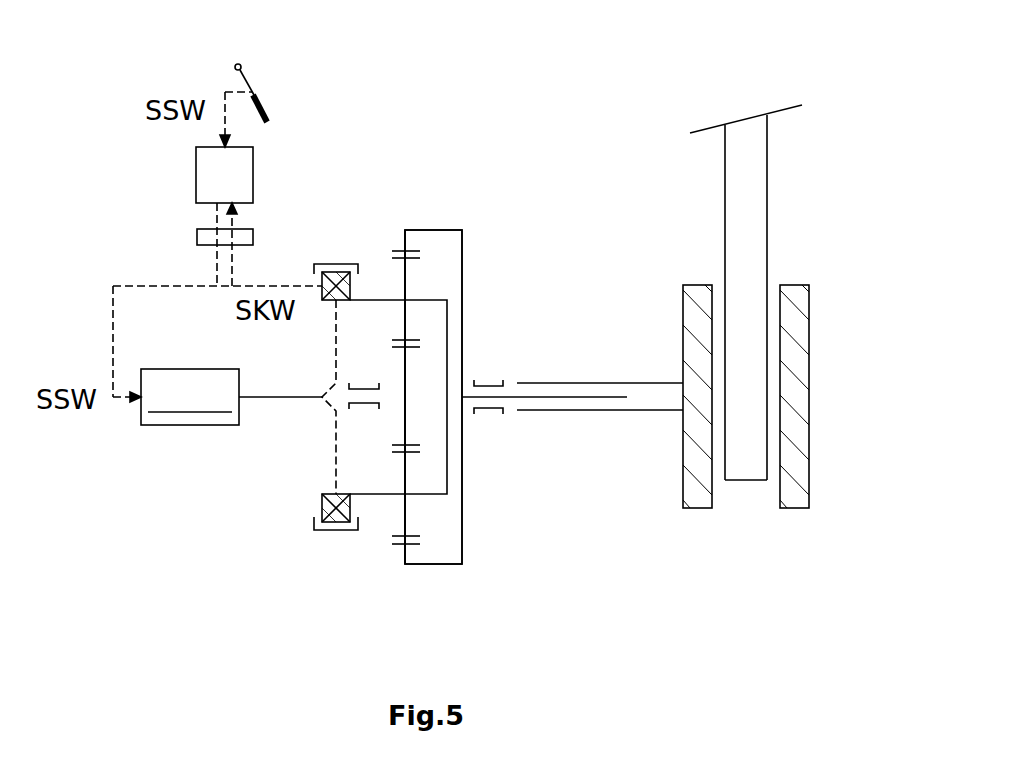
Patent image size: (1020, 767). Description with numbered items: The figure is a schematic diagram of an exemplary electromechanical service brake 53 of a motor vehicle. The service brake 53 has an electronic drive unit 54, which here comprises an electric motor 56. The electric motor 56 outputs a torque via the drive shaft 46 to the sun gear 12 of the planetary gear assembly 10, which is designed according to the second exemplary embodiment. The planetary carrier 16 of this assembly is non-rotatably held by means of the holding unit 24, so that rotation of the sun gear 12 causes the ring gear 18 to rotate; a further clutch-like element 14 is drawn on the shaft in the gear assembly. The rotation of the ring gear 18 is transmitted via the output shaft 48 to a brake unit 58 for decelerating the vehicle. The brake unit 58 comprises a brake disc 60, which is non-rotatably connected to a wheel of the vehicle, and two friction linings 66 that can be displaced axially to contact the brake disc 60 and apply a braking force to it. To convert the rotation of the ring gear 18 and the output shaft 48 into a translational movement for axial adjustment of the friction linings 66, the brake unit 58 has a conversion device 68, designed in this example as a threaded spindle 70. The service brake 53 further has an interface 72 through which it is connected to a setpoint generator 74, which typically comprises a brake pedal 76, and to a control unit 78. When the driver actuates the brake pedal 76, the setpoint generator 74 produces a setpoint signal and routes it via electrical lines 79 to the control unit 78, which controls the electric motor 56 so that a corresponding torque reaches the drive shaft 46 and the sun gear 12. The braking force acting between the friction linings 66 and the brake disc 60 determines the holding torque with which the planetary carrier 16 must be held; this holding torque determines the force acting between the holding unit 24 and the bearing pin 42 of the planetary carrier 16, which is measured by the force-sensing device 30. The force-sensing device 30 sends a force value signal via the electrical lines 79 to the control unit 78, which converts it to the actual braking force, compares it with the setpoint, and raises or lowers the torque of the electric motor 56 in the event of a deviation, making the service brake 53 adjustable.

The planetary gear assembly 10 is at (387, 195).
The sun gear 12 is at (404, 426).
The clutch/brake element 14 is at (404, 515).
The planetary carrier 16 is at (447, 313).
The ring gear 18 is at (434, 229).
The holding unit 24 is at (337, 530).
The force-sensing device 30 is at (322, 508).
The bearing pin 42 is at (363, 294).
The drive shaft 46 is at (255, 398).
The output shaft 48 is at (517, 408).
The electromechanical service brake 53 is at (150, 212).
The electronic drive unit 54 is at (190, 397).
The electric motor 56 is at (190, 397).
The brake unit 58 is at (622, 244).
The brake disc 60 is at (752, 174).
The friction linings 66 is at (690, 467).
The conversion device 68 is at (600, 362).
The threaded spindle 70 is at (565, 382).
The interface 72 is at (197, 238).
The setpoint generator 74 is at (267, 81).
The brake pedal 76 is at (261, 96).
The control unit 78 is at (244, 187).
The electrical lines 79 is at (113, 328).